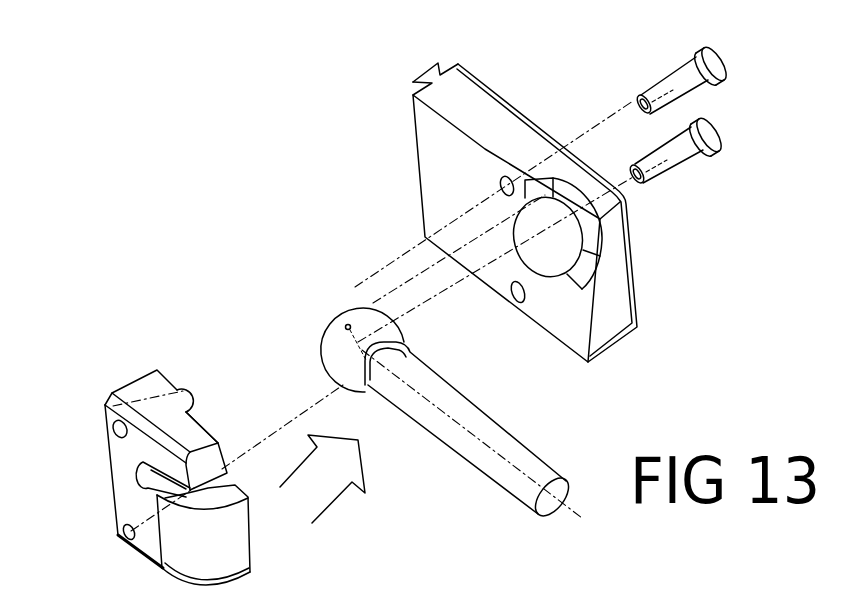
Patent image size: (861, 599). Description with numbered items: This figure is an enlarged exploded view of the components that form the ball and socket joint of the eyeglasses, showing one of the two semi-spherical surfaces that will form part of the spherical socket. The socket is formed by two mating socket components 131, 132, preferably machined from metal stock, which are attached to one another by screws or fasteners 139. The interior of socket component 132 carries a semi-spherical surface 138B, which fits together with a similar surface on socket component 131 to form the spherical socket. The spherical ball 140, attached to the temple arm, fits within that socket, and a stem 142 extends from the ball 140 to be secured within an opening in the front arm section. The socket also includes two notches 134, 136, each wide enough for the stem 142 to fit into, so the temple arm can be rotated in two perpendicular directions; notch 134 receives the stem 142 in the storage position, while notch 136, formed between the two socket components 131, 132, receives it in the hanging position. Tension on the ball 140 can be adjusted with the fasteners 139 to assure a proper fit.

The socket component 131 is at (138, 393).
The socket component 132 is at (502, 132).
The notch 134 is at (155, 480).
The notch 136 is at (208, 425).
The semi-spherical surface 138B is at (557, 245).
The fasteners 139 is at (708, 77).
The spherical ball 140 is at (373, 320).
The stem 142 is at (473, 452).